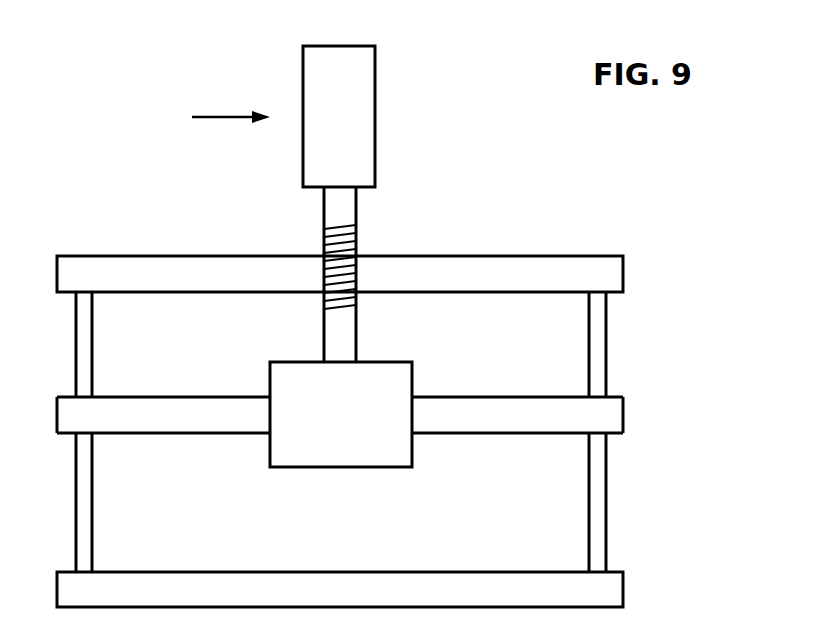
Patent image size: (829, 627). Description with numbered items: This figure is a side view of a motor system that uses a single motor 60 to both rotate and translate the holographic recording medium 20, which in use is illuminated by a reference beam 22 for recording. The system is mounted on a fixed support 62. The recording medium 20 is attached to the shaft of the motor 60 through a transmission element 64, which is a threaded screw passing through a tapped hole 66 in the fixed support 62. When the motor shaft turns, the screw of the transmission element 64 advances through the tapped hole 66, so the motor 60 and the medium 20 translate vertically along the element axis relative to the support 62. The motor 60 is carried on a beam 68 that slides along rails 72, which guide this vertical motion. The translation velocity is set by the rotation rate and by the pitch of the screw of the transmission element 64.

The recording medium 20 is at (393, 113).
The reference beam 22 is at (230, 117).
The motor 60 is at (340, 467).
The fixed support 62 is at (624, 270).
The transmission element 64 is at (358, 190).
The tapped hole 66 is at (358, 275).
The beam 68 is at (624, 413).
The rails 72 is at (607, 352).